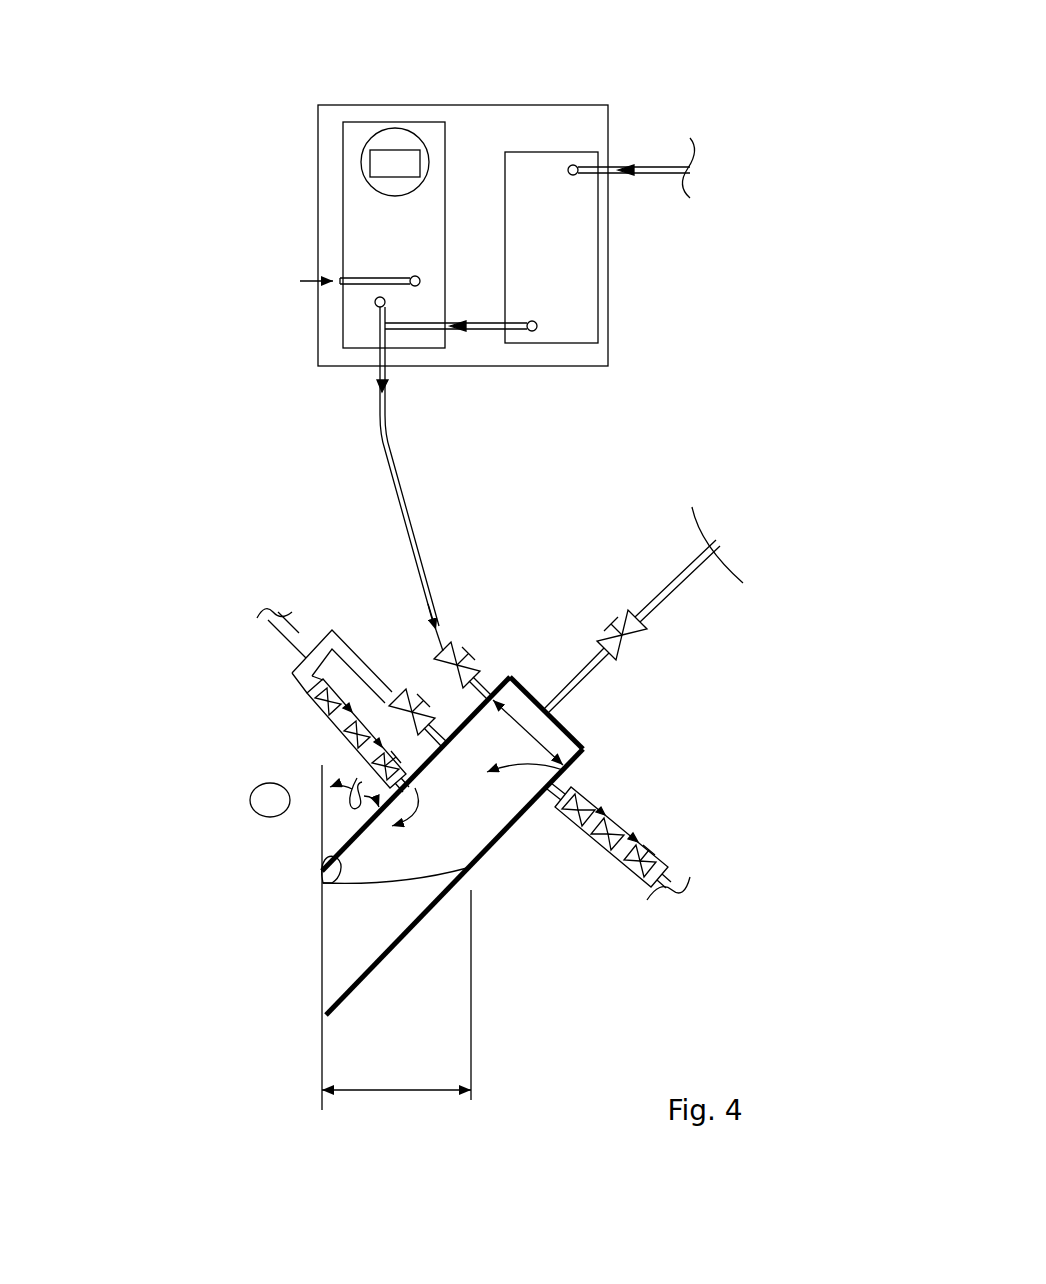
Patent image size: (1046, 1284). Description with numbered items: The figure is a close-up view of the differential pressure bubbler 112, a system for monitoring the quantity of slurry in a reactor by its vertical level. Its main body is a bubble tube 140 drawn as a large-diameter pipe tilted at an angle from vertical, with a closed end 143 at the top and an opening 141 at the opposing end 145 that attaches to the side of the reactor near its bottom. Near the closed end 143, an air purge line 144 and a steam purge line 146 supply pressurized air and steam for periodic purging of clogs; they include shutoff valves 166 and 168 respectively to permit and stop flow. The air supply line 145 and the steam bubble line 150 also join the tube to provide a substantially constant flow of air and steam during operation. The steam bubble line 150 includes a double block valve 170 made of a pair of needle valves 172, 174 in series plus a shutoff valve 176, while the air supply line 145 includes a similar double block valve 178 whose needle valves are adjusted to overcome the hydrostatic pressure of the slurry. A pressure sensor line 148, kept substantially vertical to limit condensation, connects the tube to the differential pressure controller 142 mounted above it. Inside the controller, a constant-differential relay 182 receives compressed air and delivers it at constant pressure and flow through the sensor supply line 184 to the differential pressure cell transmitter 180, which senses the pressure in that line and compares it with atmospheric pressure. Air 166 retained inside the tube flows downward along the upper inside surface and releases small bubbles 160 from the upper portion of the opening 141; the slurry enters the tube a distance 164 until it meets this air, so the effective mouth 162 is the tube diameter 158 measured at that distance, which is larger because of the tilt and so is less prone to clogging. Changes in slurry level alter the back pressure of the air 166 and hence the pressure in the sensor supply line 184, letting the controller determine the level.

The differential pressure bubbler 112 is at (734, 371).
The bubble tube 140 is at (513, 678).
The opening 141 is at (287, 912).
The differential pressure controller 142 is at (460, 102).
The closed end 143 is at (585, 750).
The air purge line 144 is at (353, 629).
The air supply line 145 is at (274, 675).
The steam purge line 146 is at (650, 657).
The pressure sensor line 148 is at (478, 628).
The steam bubble line 150 is at (662, 820).
The diameter 158 is at (527, 735).
The bubbles 160 is at (250, 792).
The mouth 162 is at (384, 899).
The distance 164 is at (408, 1090).
The air 166 is at (405, 680).
The shutoff valve 168 is at (660, 625).
The double block valve 170 is at (668, 866).
The needle valve 172 is at (636, 865).
The needle valve 174 is at (600, 835).
The shutoff valve 176 is at (565, 810).
The double block valve 178 is at (310, 697).
The differential pressure cell transmitter 180 is at (355, 188).
The constant-differential relay 182 is at (578, 155).
The sensor supply line 184 is at (388, 462).